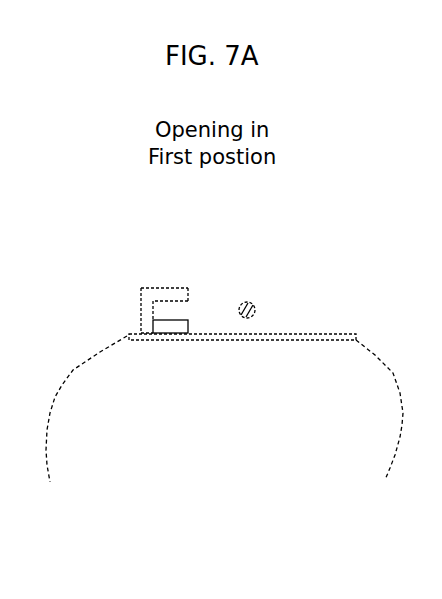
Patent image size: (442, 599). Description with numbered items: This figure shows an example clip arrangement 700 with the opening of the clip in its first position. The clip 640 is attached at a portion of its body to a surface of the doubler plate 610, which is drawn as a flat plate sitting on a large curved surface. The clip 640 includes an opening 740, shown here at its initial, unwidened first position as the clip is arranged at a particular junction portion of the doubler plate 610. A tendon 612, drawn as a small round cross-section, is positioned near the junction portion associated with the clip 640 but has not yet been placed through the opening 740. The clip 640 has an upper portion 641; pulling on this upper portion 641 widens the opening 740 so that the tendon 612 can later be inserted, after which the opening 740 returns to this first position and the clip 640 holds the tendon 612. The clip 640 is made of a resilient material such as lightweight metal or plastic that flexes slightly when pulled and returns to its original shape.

The clip and doubler plate assembly in first position 700 is at (398, 68).
The doubler plate 610 is at (129, 335).
The tendon 612 is at (257, 308).
The clip 640 is at (160, 287).
The upper portion 641 is at (174, 288).
The opening 740 is at (190, 306).